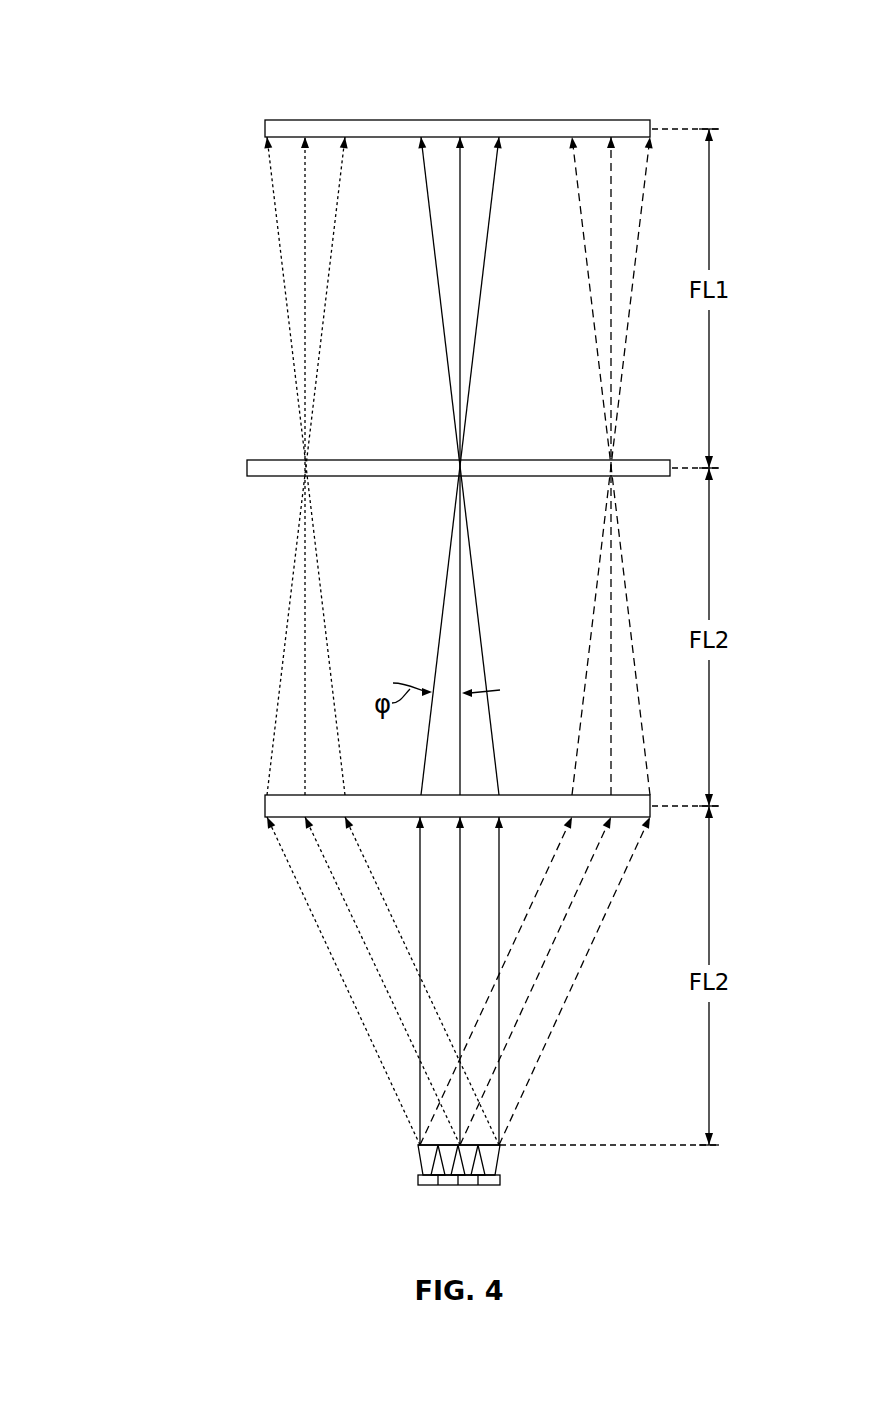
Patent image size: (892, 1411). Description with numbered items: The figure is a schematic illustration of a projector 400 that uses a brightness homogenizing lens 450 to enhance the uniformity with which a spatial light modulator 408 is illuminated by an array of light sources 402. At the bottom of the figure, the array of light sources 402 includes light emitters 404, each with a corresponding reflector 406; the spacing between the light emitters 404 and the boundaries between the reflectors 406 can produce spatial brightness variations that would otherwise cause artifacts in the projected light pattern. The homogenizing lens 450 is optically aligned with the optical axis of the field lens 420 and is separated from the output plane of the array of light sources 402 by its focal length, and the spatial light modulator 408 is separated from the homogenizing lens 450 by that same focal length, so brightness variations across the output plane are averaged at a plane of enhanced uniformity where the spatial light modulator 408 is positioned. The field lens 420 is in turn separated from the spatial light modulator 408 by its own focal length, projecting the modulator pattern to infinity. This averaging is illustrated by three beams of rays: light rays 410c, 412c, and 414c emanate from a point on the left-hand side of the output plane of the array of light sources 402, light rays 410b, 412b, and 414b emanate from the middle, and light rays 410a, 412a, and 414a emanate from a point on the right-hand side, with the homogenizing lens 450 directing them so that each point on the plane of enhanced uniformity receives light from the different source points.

The projector 400 is at (213, 34).
The array of light sources 402 is at (455, 1181).
The light emitter 404 is at (500, 1182).
The reflector 406 is at (497, 1158).
The spatial light modulator 408 is at (247, 469).
The light ray 410a is at (276, 226).
The light ray 410b is at (305, 277).
The light ray 410c is at (322, 325).
The light ray 412a is at (431, 240).
The light ray 412b is at (459, 288).
The light ray 412c is at (474, 338).
The light ray 414a is at (587, 257).
The light ray 414b is at (610, 300).
The light ray 414c is at (623, 360).
The field lens 420 is at (265, 128).
The brightness homogenizing lens 450 is at (265, 807).